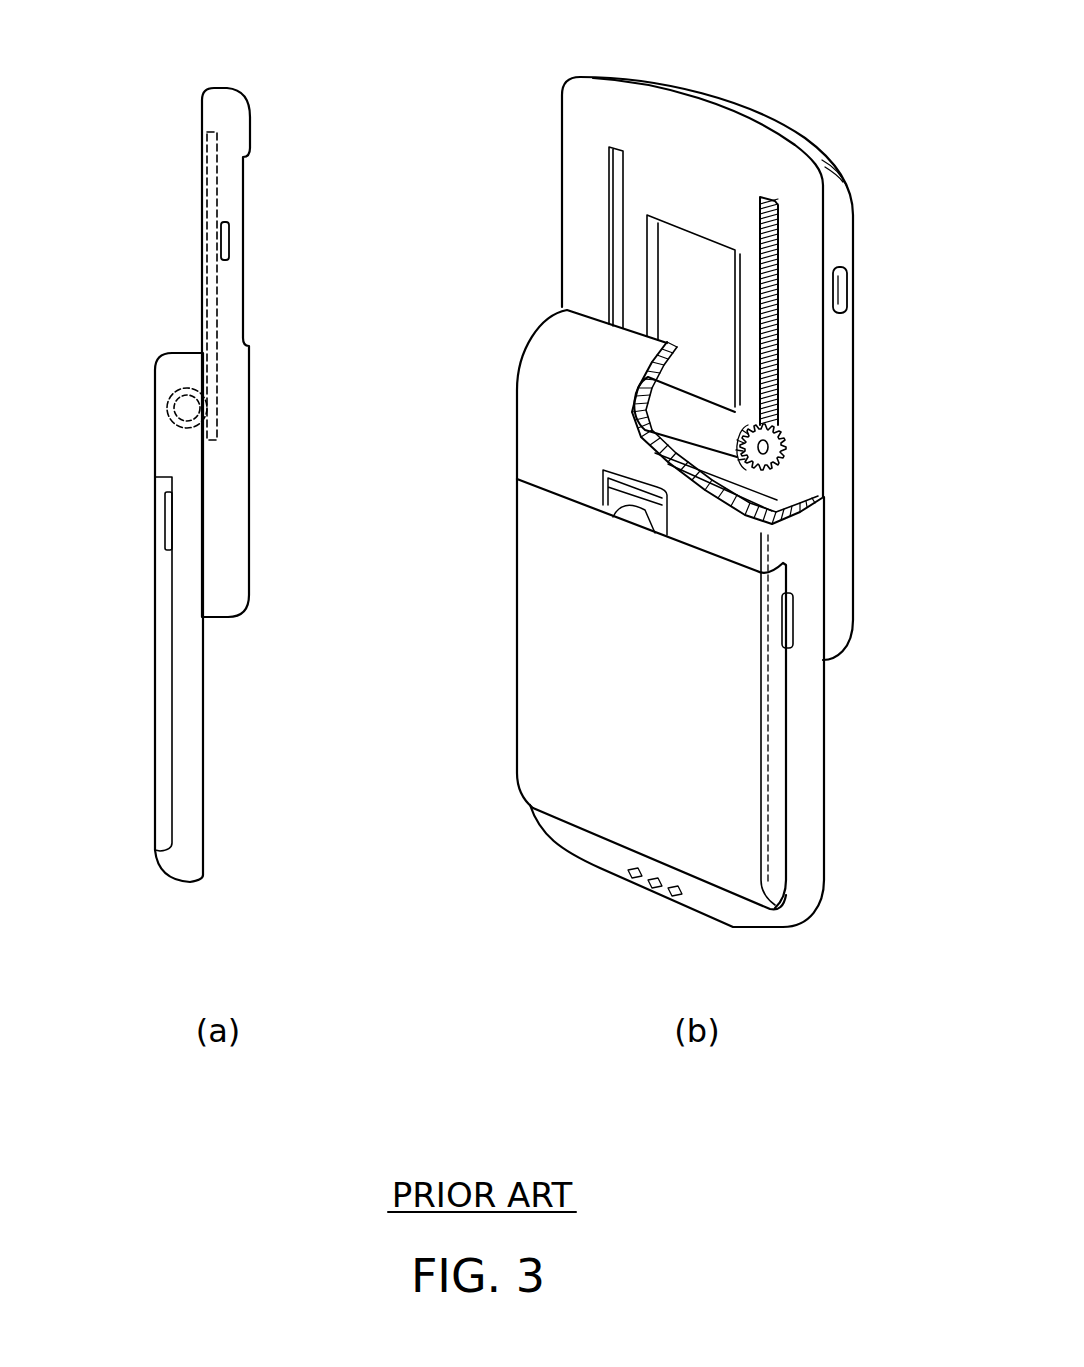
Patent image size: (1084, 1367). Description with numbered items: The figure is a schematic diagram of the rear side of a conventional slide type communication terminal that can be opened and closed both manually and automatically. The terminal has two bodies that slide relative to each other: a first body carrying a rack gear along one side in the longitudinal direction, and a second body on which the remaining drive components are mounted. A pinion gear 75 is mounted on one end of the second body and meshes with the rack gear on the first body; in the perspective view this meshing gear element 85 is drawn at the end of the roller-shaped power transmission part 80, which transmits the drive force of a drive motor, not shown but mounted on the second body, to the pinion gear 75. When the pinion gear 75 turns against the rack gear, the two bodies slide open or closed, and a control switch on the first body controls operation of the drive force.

The pinion gear 75 is at (170, 397).
The power transmission part 80 is at (670, 420).
The pinion gear 85 is at (784, 438).